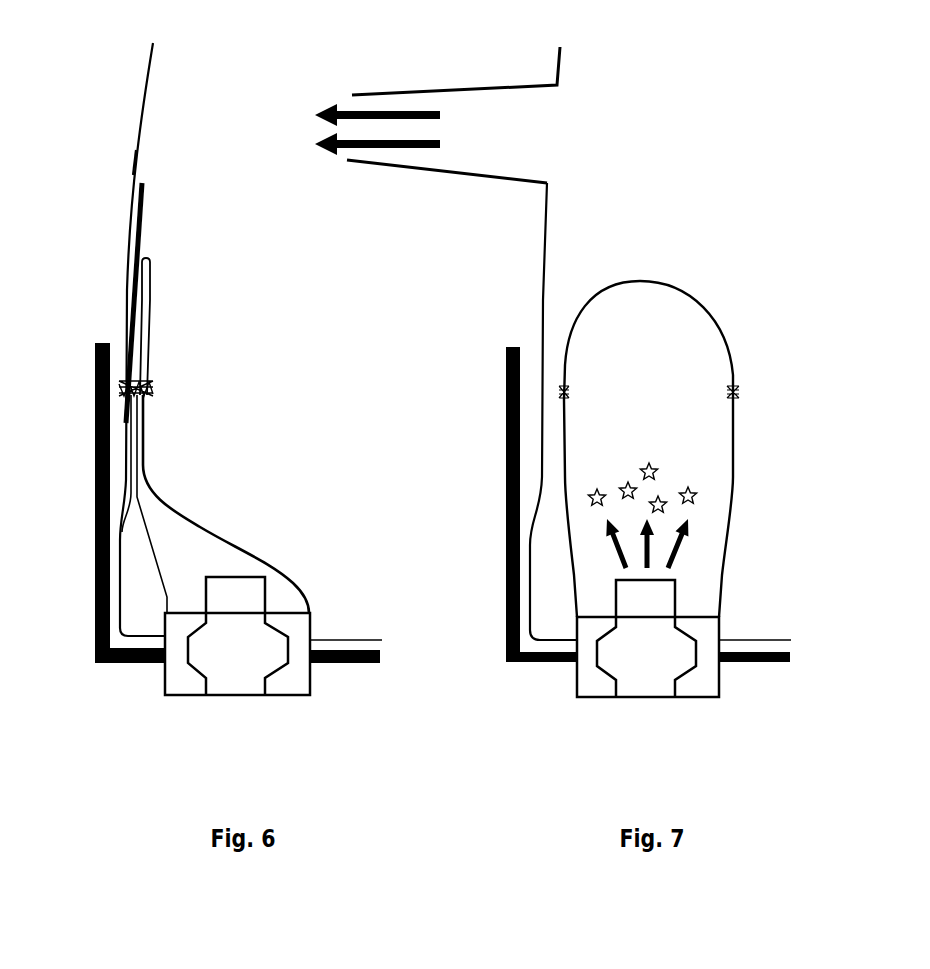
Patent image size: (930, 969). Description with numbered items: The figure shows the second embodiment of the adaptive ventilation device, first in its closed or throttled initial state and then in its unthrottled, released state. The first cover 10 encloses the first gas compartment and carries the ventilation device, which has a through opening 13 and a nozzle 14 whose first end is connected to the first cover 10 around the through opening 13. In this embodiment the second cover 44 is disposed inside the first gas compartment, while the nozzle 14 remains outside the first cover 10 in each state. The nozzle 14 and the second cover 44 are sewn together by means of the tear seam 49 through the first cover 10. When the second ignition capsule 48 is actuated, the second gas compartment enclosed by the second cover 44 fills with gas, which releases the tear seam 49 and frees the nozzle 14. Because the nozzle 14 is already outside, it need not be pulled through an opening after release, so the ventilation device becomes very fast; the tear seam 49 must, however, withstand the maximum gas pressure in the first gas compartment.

In FIG. 6, the first cover 10 is at (152, 65).
In FIG. 7, the first cover 10 is at (540, 262).
In FIG. 6, the through opening 13 is at (143, 153).
In FIG. 7, the through opening 13 is at (550, 128).
In FIG. 6, the nozzle 14 is at (122, 307).
In FIG. 7, the nozzle 14 is at (407, 88).
In FIG. 6, the second cover 44 is at (187, 520).
In FIG. 7, the second cover 44 is at (712, 305).
In FIG. 6, the second ignition capsule 48 is at (262, 593).
In FIG. 6, the tear seam 49 is at (152, 382).